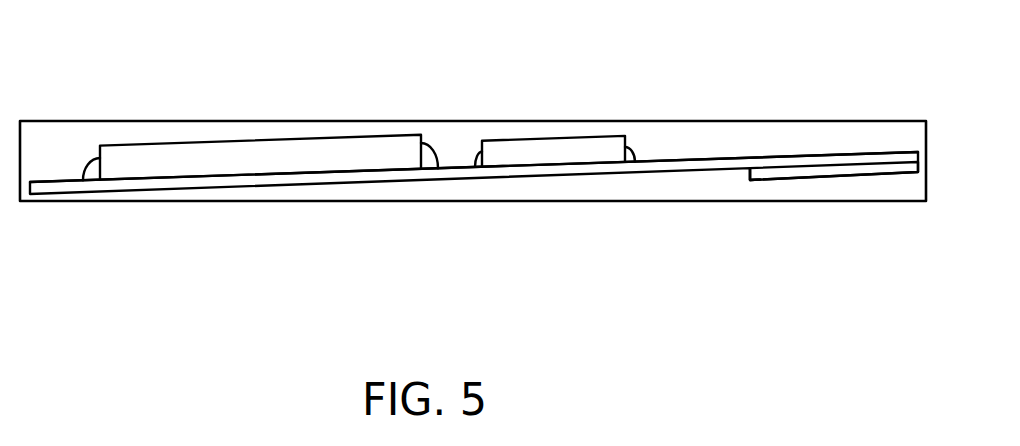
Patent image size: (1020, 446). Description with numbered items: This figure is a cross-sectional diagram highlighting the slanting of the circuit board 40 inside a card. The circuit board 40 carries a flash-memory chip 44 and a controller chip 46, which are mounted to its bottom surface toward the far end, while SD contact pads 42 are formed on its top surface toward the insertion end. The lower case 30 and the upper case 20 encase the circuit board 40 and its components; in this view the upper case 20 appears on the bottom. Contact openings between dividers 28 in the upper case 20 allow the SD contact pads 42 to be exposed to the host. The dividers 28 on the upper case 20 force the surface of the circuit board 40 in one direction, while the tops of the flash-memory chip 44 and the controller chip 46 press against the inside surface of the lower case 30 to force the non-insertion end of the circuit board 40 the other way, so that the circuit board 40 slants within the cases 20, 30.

The upper case 20 is at (463, 202).
The dividers 28 is at (755, 180).
The lower case 30 is at (127, 120).
The circuit board 40 is at (722, 157).
The SD contact pads 42 is at (827, 172).
The flash-memory chip 44 is at (288, 150).
The controller chip 46 is at (563, 152).